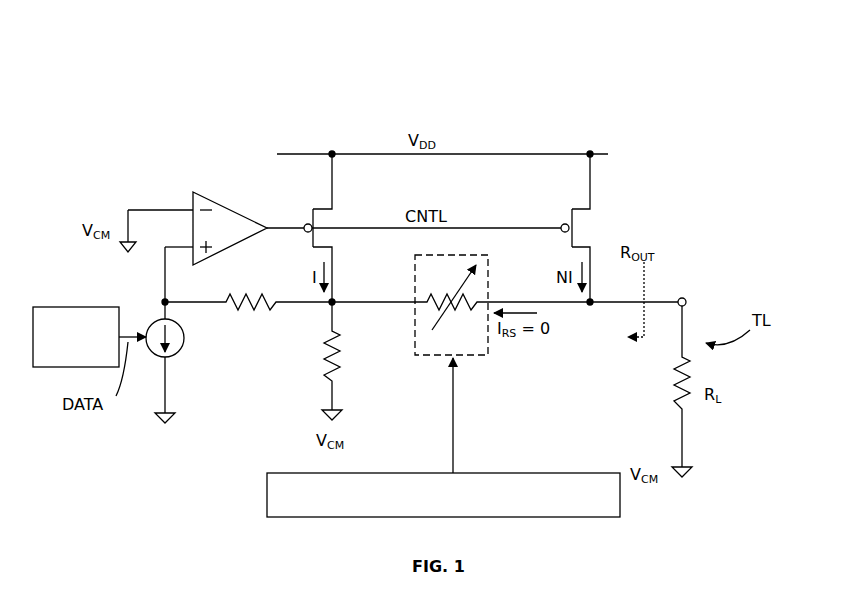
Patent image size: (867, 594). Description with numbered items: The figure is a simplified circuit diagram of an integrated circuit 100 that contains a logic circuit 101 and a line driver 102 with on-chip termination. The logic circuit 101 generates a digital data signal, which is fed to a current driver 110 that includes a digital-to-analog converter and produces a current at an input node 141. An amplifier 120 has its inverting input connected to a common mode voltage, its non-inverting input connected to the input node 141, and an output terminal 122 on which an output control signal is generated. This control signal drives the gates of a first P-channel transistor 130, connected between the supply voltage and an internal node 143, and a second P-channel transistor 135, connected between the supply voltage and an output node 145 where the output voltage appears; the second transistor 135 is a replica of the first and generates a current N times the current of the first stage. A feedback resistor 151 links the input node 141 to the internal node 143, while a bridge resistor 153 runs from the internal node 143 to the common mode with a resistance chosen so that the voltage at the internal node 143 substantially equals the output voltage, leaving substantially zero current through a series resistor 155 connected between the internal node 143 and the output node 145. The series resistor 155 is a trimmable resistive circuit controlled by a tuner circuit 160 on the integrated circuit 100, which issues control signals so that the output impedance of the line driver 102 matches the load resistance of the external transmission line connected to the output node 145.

The integrated circuit 100 is at (141, 82).
The logic circuit 101 is at (80, 305).
The line driver 102 is at (241, 130).
The current driver 110 is at (191, 355).
The amplifier 120 is at (207, 190).
The output terminal 122 is at (269, 228).
The first P-channel transistor 130 is at (343, 214).
The second P-channel transistor 135 is at (614, 194).
The input node 141 is at (164, 301).
The internal node 143 is at (336, 300).
The output node 145 is at (681, 297).
The feedback resistor 151 is at (237, 283).
The bridge resistor 153 is at (345, 380).
The series resistor 155 is at (491, 358).
The tuner circuit 160 is at (443, 437).